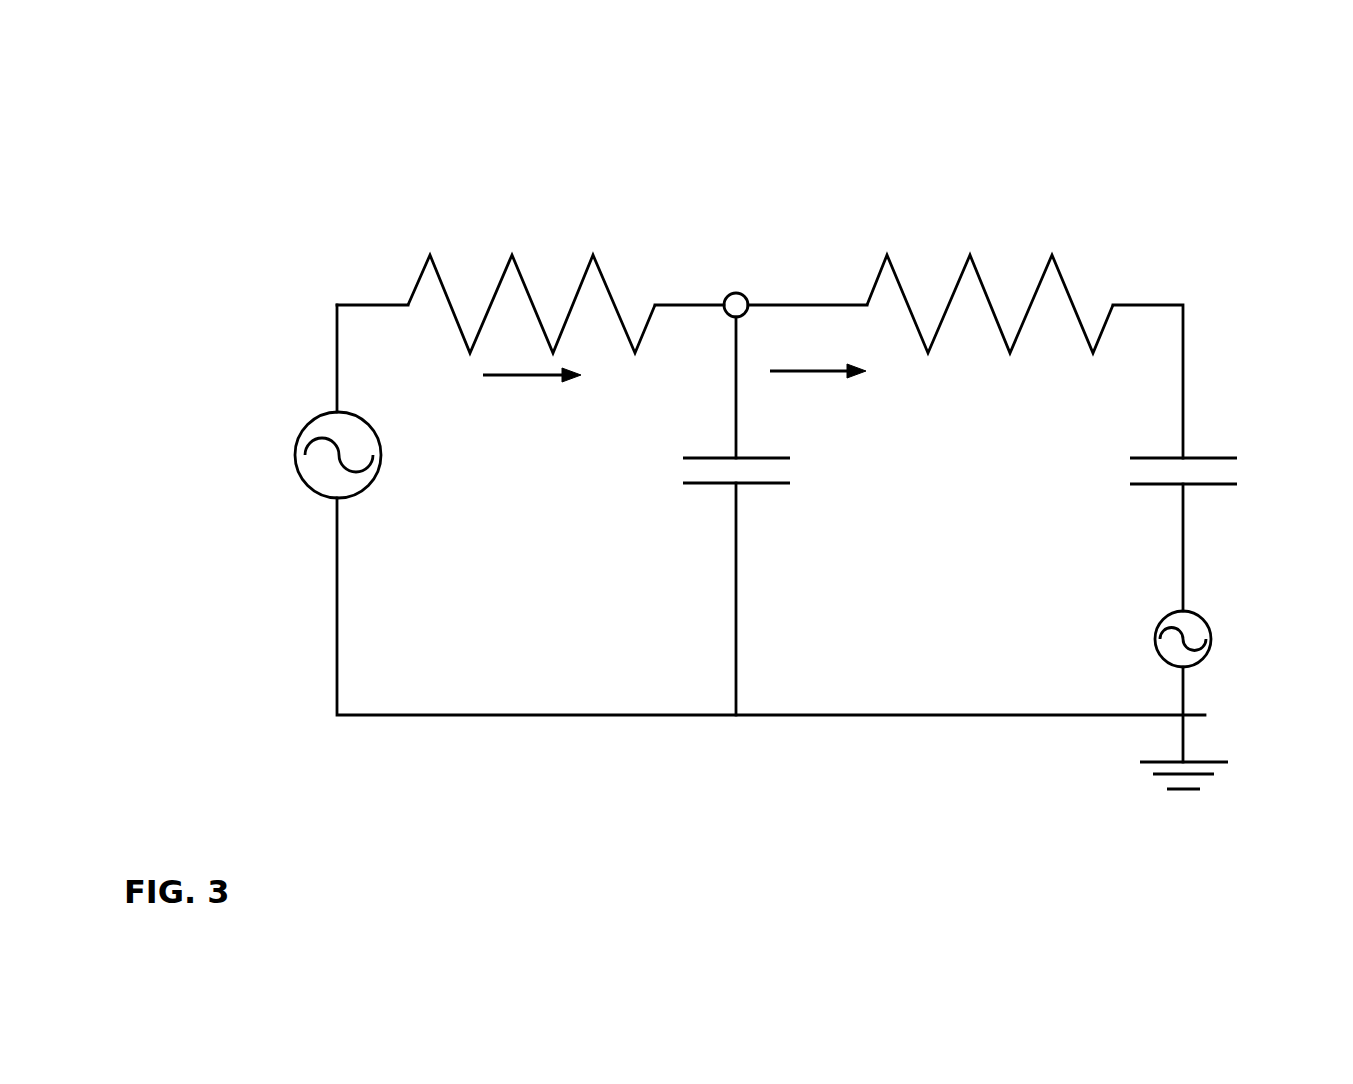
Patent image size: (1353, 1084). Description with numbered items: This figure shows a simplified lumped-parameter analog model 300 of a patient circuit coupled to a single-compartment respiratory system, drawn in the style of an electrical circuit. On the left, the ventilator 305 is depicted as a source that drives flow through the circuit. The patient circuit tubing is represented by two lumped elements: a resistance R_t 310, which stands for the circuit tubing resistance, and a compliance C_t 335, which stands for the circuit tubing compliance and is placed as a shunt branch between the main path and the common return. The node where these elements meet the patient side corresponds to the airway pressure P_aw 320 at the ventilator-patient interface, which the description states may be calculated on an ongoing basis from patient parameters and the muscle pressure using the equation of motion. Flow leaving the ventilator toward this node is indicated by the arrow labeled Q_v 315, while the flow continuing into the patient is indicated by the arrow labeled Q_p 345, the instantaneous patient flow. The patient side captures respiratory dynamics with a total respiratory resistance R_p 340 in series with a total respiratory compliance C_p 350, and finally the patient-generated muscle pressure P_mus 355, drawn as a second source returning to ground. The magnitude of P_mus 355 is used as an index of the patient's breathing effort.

The model 300 is at (300, 105).
The ventilator 305 is at (287, 455).
The resistance R_t 310 is at (531, 270).
The ventilator flow Qv 315 is at (532, 402).
The airway pressure P_aw 320 is at (715, 328).
The compliance C_t 335 is at (715, 488).
The total respiratory resistance R_p 340 is at (990, 270).
The patient flow Qp 345 is at (818, 398).
The total respiratory compliance C_p 350 is at (1210, 453).
The patient-generated muscle pressure P_mus 355 is at (1158, 639).